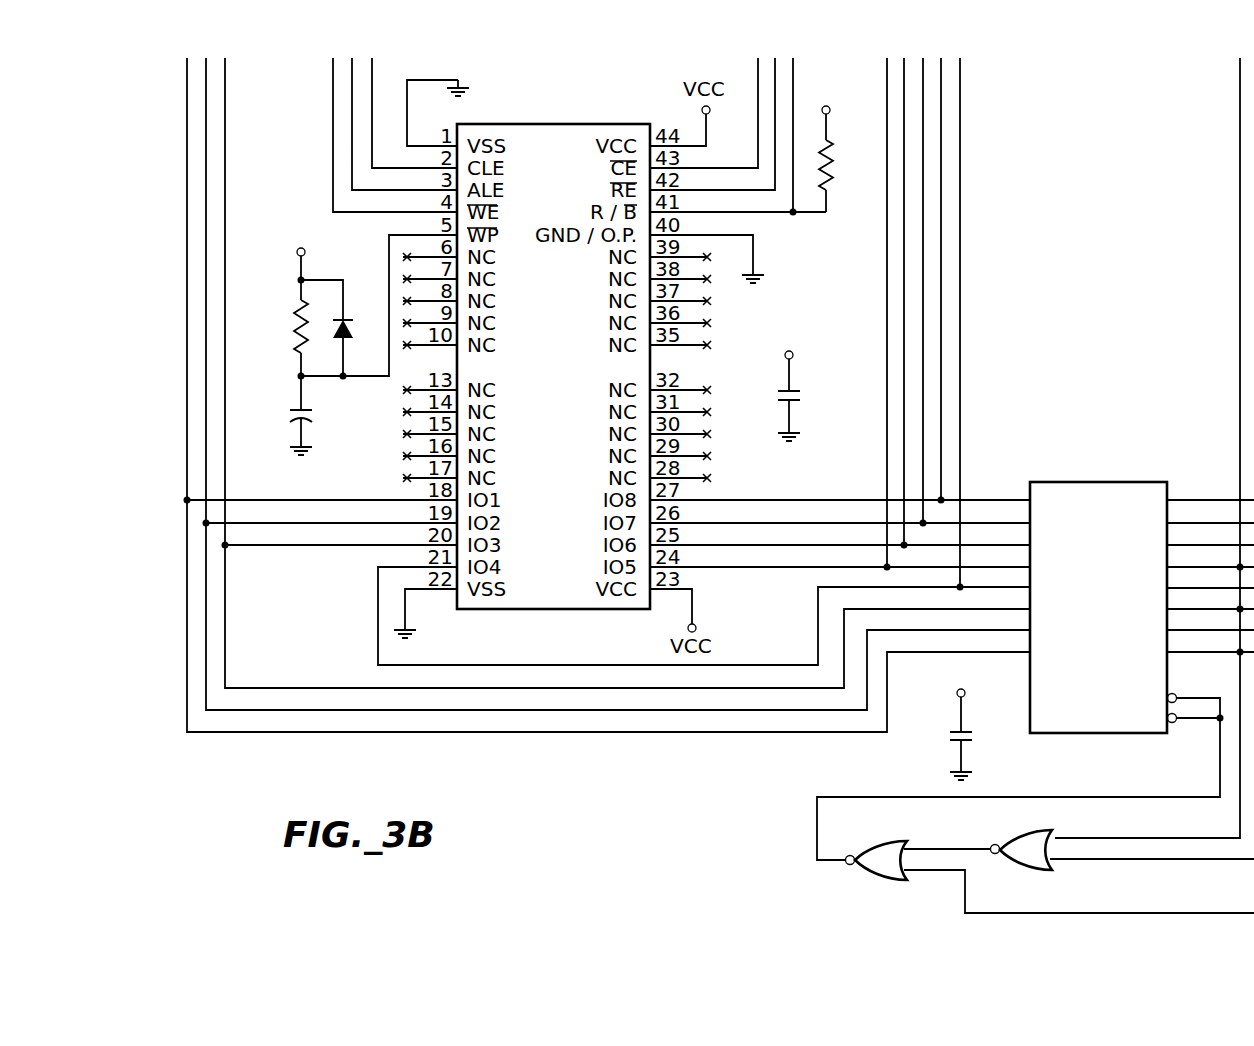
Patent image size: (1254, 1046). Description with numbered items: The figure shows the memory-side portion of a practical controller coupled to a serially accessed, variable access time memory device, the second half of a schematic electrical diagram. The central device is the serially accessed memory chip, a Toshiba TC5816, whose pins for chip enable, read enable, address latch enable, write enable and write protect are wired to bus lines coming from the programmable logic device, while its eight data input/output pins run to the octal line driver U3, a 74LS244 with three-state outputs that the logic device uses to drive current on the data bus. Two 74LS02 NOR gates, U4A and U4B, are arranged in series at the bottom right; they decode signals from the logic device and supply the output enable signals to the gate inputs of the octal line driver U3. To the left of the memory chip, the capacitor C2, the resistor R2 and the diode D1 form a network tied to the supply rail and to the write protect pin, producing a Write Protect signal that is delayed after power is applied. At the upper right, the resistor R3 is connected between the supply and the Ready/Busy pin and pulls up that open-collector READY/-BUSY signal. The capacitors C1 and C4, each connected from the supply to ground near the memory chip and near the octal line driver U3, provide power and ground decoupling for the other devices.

The resistor R2 is at (276, 299).
The diode D1 is at (342, 341).
The capacitor C2 is at (280, 417).
The resistor R3 is at (822, 169).
The capacitor C1 is at (768, 382).
The capacitor C4 is at (942, 720).
The octal line driver U3 is at (1105, 605).
The NOR gate U4A is at (1027, 849).
The NOR gate U4B is at (884, 860).